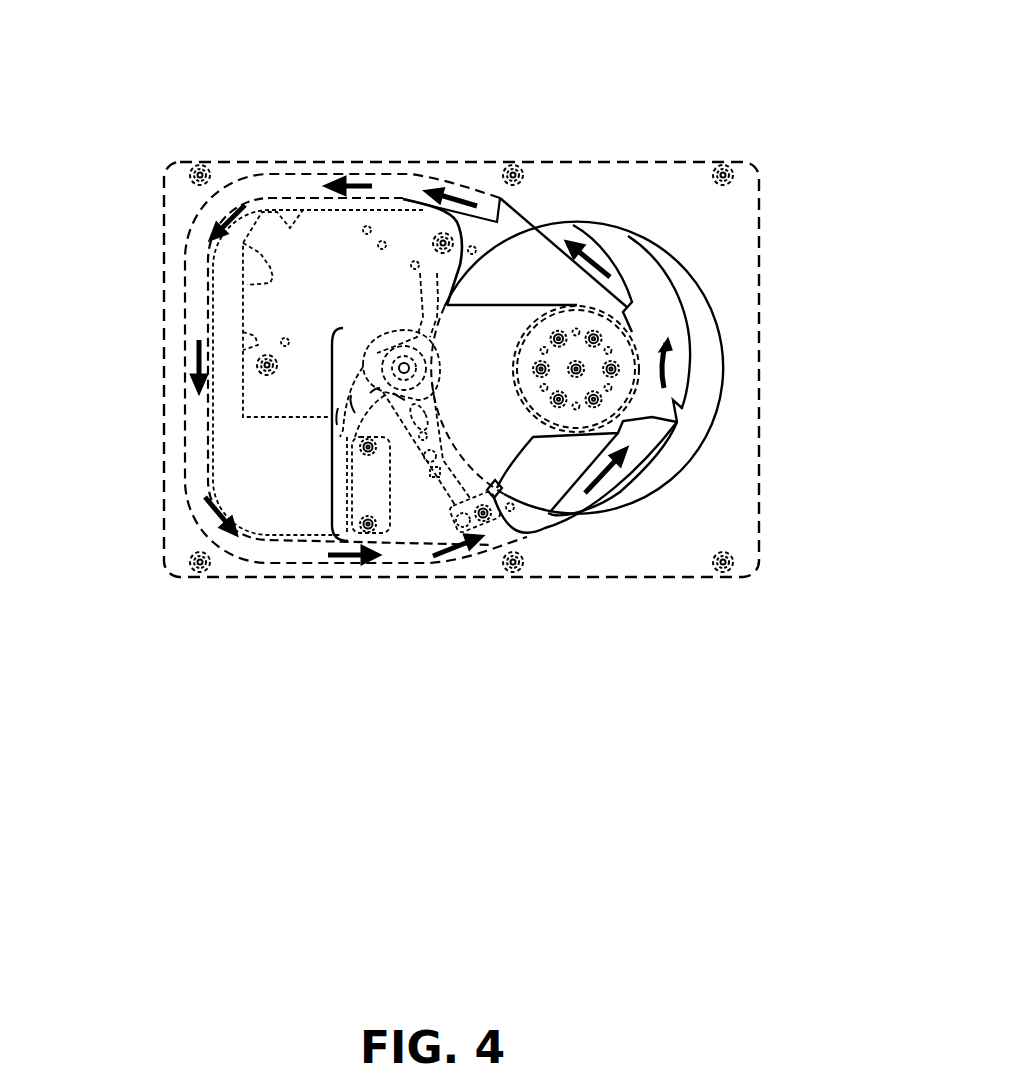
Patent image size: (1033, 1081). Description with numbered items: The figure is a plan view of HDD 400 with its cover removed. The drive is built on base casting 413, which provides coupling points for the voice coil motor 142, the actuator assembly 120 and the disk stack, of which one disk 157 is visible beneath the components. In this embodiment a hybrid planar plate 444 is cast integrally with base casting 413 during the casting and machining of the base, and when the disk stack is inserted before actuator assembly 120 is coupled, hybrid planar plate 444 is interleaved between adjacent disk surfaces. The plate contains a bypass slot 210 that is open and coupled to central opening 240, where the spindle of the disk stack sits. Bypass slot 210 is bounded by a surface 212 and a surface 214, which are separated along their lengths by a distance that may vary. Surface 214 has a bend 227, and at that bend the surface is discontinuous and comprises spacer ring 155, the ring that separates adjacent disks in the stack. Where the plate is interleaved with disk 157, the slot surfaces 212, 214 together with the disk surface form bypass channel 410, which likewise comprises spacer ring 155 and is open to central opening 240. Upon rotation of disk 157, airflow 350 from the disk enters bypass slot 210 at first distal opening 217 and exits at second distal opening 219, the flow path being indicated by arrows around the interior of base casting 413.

The HDD 400 is at (775, 143).
The base casting 413 is at (190, 207).
The airflow 350 is at (196, 360).
The voice coil motor 142 is at (360, 288).
The actuator assembly 120 is at (330, 432).
The bypass slot 210 is at (577, 447).
The bypass channel 410 is at (650, 425).
The central opening 240 is at (542, 310).
The surface 214 is at (636, 330).
The second distal opening 219 is at (500, 198).
The hybrid planar plate 444 is at (541, 285).
The spacer ring 155 is at (738, 288).
The bend 227 is at (636, 345).
The surface 212 is at (678, 404).
The first distal opening 217 is at (568, 512).
The disk 157 is at (518, 430).